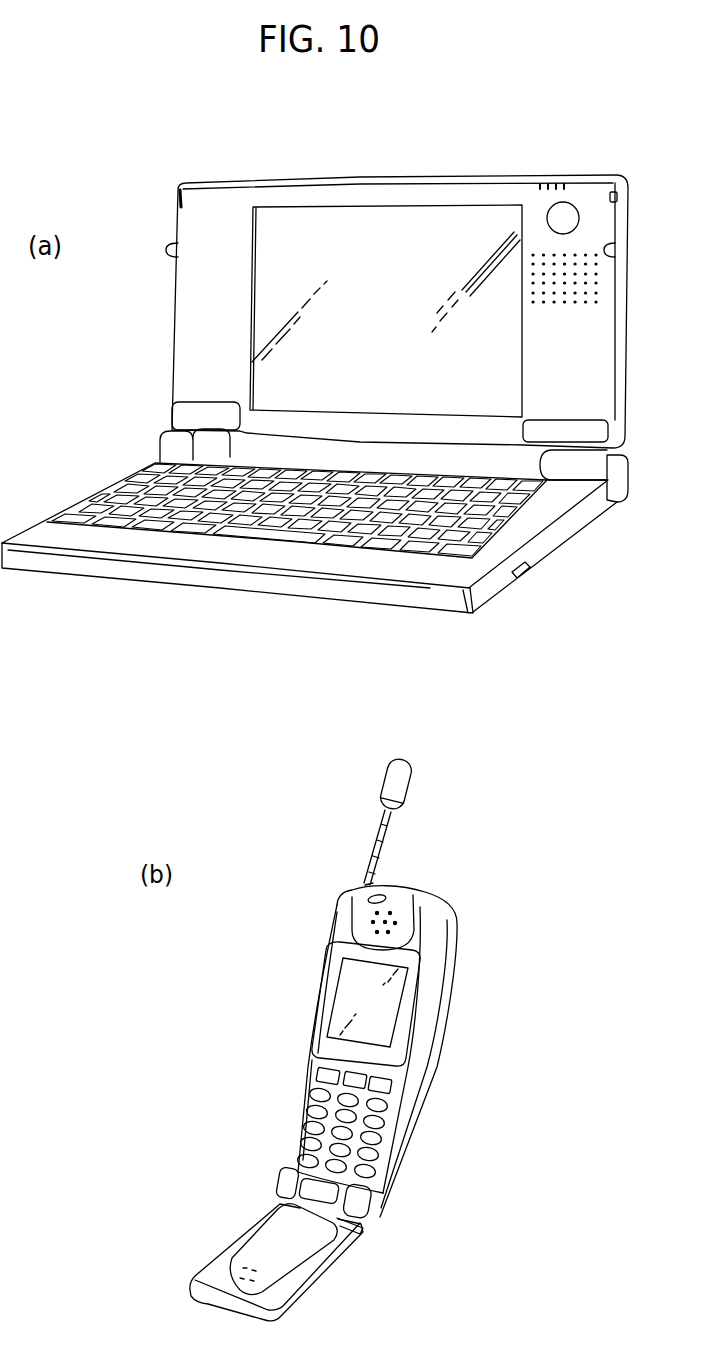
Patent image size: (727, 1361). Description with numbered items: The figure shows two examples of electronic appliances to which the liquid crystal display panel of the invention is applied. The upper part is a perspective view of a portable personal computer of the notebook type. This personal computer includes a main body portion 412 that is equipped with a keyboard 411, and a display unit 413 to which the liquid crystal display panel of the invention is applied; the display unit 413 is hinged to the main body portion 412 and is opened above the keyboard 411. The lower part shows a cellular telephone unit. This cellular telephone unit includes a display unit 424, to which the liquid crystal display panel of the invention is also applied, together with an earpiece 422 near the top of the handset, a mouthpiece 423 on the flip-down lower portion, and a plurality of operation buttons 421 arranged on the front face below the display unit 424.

The keyboard 411 is at (557, 527).
The main body portion 412 is at (156, 573).
The display unit 413 is at (347, 228).
The operation buttons 421 is at (370, 1138).
The earpiece 422 is at (372, 920).
The mouthpiece 423 is at (222, 1247).
The display unit 424 is at (353, 995).